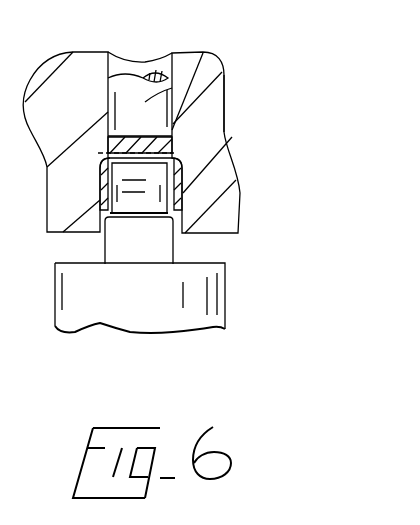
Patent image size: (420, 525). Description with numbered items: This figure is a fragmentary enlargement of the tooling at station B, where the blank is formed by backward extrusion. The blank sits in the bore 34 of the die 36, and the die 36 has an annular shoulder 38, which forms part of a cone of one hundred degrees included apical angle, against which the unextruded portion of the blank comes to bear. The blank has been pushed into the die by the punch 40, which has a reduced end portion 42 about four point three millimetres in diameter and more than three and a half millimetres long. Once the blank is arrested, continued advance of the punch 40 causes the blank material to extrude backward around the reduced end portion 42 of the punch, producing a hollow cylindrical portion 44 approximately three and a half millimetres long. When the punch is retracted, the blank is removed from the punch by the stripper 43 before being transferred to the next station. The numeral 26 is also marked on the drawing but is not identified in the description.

The housing body 26 is at (203, 53).
The bore 34 is at (112, 60).
The die 36 is at (222, 90).
The annular shoulder 38 is at (183, 170).
The punch 40 is at (150, 248).
The reduced end portion 42 is at (148, 180).
The stripper 43 is at (163, 313).
The hollow cylindrical portion 44 is at (178, 198).